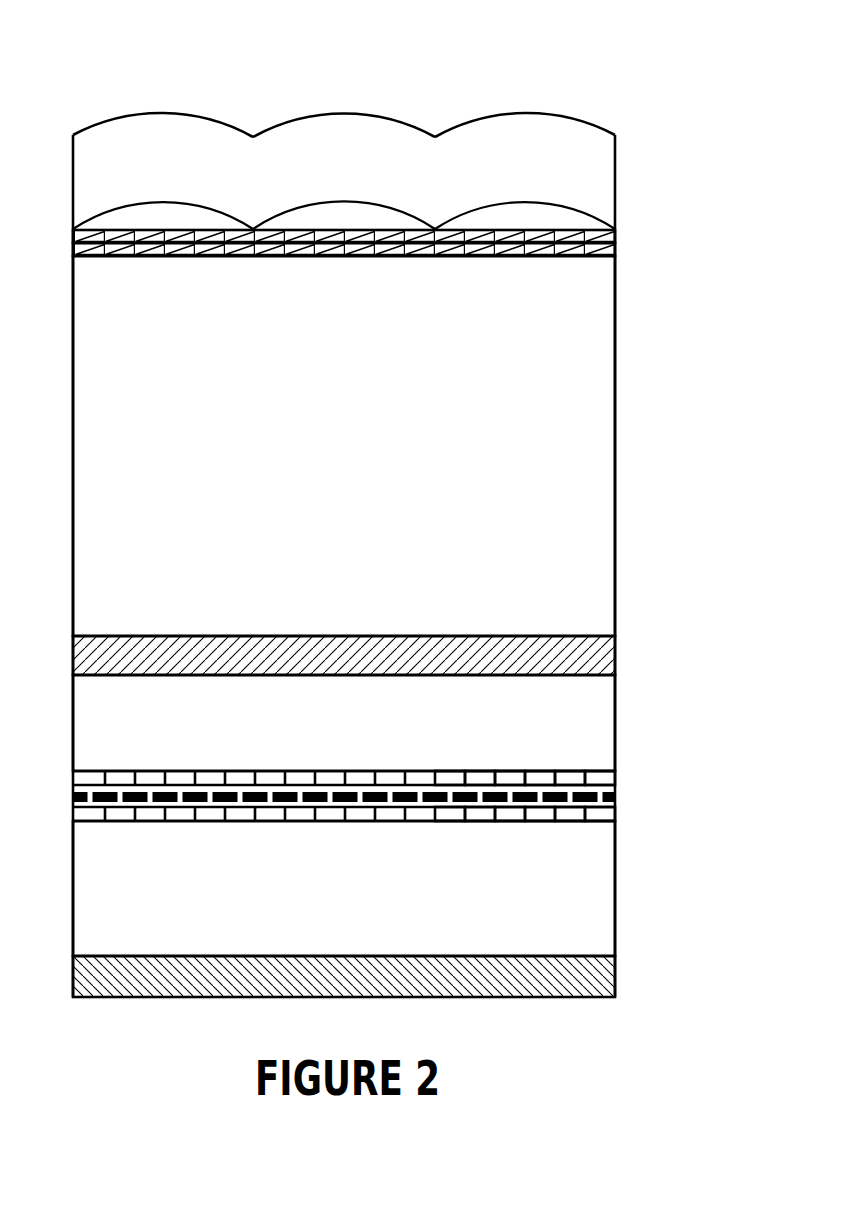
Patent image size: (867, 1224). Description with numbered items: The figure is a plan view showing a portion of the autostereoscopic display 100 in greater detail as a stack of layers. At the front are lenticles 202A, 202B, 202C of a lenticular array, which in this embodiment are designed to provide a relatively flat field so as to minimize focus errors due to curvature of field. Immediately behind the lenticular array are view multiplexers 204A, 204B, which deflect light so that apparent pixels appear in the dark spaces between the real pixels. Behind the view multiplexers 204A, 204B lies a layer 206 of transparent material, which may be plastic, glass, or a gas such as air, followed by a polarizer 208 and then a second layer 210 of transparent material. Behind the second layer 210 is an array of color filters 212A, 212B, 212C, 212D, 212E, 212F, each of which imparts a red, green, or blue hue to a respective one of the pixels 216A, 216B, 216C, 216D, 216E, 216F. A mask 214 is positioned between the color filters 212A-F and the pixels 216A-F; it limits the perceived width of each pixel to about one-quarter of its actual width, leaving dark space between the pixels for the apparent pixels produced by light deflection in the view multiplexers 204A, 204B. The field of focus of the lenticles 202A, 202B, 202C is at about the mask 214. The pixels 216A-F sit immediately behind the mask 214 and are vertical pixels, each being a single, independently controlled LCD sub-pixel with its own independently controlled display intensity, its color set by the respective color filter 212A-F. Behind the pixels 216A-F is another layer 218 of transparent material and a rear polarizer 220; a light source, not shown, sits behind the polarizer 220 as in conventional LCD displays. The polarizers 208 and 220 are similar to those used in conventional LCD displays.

The autostereoscopic display 100 is at (487, 57).
The lenticle 202A is at (512, 108).
The lenticle 202B is at (345, 112).
The lenticle 202C is at (177, 113).
The view multiplexer 204A is at (617, 237).
The view multiplexer 204B is at (617, 250).
The layer of transparent material 206 is at (360, 459).
The polarizer 208 is at (617, 656).
The second layer of transparent material 210 is at (361, 735).
The color filter 212A is at (452, 770).
The color filter 212B is at (483, 770).
The color filter 212C is at (512, 770).
The color filter 212D is at (542, 770).
The color filter 212E is at (572, 770).
The color filter 212F is at (601, 770).
The mask 214 is at (617, 797).
The pixel 216A is at (450, 822).
The pixel 216B is at (483, 822).
The pixel 216C is at (512, 822).
The pixel 216D is at (542, 822).
The pixel 216E is at (572, 822).
The pixel 216F is at (600, 822).
The layer of transparent material 218 is at (361, 900).
The polarizer 220 is at (617, 975).